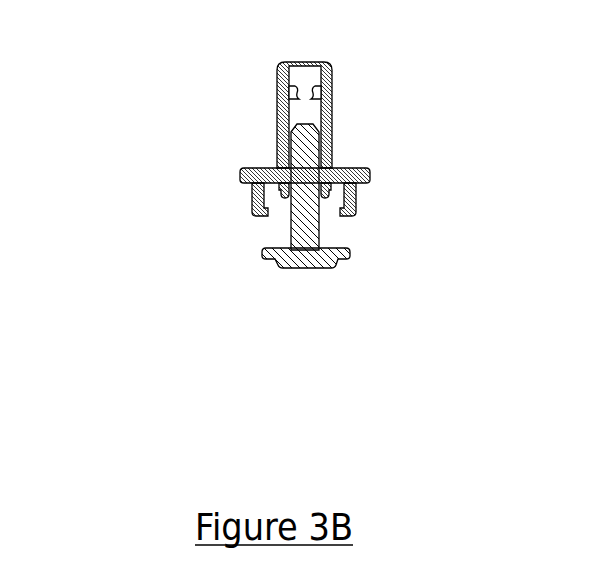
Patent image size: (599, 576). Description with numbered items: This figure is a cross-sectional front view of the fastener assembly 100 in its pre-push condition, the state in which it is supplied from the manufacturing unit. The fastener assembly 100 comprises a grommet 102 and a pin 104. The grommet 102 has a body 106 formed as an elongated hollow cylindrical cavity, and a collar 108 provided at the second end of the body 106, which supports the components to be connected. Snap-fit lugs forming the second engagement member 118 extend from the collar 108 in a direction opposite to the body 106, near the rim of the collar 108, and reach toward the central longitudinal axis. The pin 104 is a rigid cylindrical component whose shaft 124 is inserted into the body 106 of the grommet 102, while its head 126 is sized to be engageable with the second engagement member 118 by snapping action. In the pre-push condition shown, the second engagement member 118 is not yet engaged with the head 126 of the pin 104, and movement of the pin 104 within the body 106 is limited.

The fastener assembly 100 is at (303, 170).
The grommet 102 is at (303, 118).
The pin 104 is at (283, 221).
The body 106 is at (333, 116).
The collar 108 is at (262, 168).
The second engagement member 118 is at (356, 190).
The shaft 124 is at (320, 226).
The head 126 is at (303, 259).